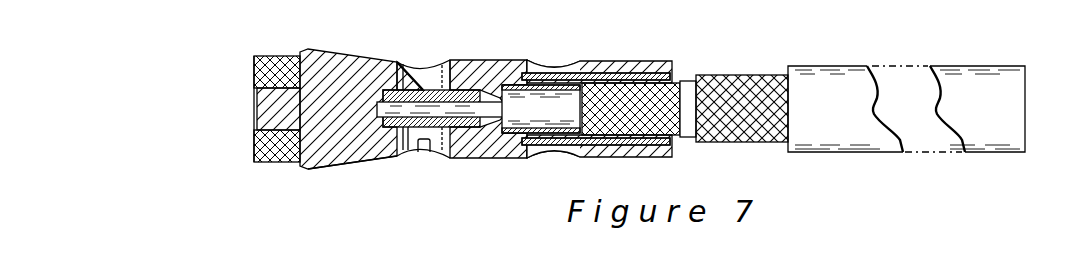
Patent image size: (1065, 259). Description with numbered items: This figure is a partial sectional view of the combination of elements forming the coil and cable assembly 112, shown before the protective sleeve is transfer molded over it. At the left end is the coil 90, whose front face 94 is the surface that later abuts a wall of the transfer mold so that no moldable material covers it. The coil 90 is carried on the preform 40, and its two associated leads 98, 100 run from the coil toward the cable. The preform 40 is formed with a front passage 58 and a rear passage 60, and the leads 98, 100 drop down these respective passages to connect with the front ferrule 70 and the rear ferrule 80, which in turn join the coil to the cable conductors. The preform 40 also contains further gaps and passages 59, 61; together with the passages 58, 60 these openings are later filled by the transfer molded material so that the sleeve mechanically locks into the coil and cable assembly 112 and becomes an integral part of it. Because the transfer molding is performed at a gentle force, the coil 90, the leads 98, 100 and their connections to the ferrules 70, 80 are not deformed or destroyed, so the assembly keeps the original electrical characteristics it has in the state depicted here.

The preform 40 is at (485, 68).
The front passage 58 is at (420, 72).
The passage 59 is at (432, 142).
The rear passage 60 is at (567, 157).
The passage 61 is at (578, 62).
The front ferrule 70 is at (408, 155).
The rear ferrule 80 is at (635, 143).
The coil 90 is at (263, 56).
The front face 94 is at (254, 72).
The lead 98 is at (337, 51).
The lead 100 is at (335, 167).
The coil and cable assembly 112 is at (687, 34).